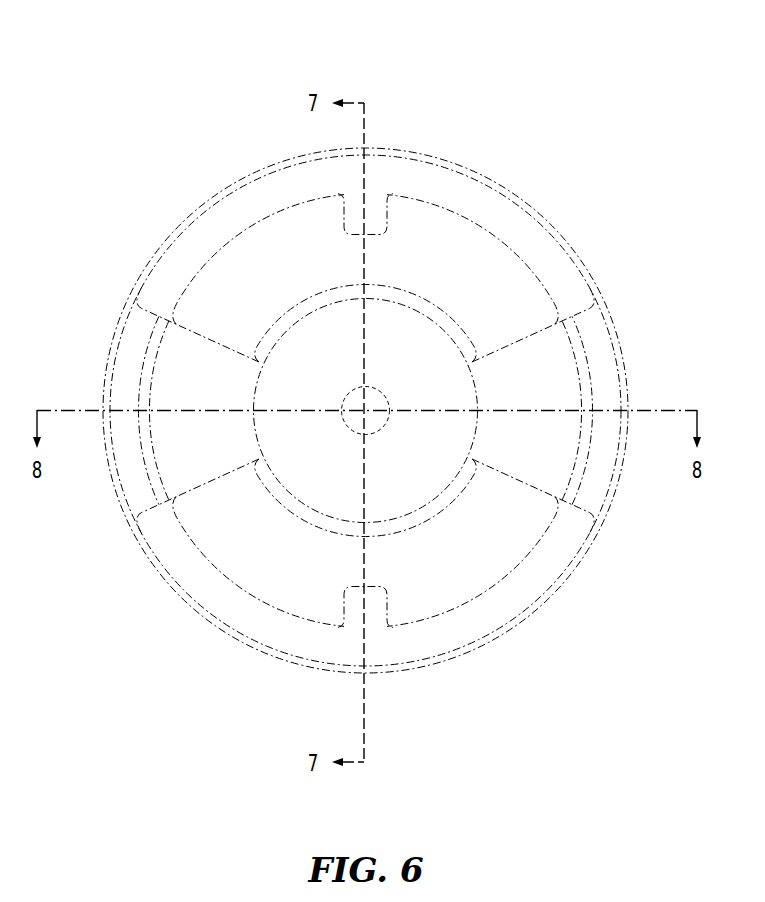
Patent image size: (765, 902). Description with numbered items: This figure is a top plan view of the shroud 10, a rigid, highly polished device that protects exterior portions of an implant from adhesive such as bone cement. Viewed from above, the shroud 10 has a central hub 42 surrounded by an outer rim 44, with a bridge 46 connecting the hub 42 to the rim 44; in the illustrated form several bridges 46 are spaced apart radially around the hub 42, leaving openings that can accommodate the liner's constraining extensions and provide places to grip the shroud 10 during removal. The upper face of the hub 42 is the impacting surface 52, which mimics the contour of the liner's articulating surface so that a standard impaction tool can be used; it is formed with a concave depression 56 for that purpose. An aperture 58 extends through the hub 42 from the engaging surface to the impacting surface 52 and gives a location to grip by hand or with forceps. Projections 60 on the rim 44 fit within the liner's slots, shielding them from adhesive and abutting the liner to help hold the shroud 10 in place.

The shroud 10 is at (565, 68).
The hub 42 is at (425, 368).
The rim 44 is at (513, 222).
The bridge 46 is at (528, 447).
The impacting surface 52 is at (313, 352).
The depression 56 is at (295, 387).
The aperture 58 is at (356, 428).
The projections 60 is at (372, 218).